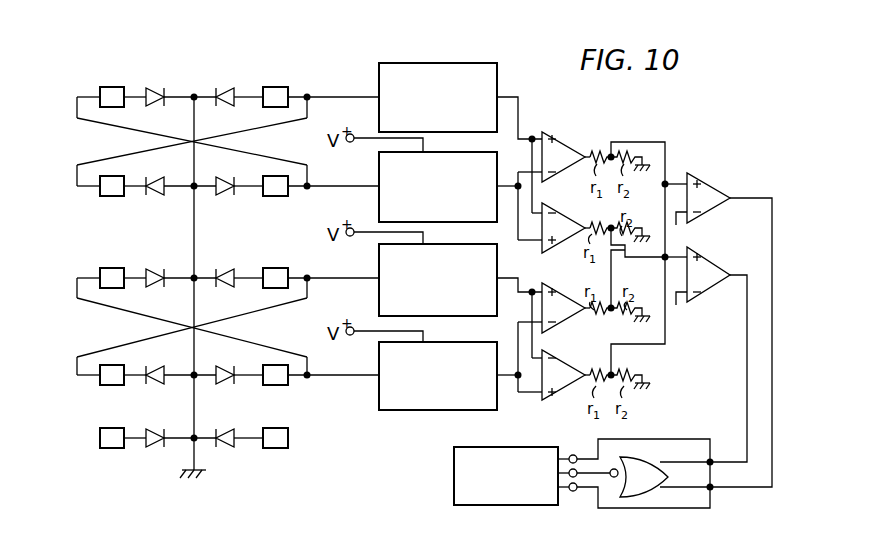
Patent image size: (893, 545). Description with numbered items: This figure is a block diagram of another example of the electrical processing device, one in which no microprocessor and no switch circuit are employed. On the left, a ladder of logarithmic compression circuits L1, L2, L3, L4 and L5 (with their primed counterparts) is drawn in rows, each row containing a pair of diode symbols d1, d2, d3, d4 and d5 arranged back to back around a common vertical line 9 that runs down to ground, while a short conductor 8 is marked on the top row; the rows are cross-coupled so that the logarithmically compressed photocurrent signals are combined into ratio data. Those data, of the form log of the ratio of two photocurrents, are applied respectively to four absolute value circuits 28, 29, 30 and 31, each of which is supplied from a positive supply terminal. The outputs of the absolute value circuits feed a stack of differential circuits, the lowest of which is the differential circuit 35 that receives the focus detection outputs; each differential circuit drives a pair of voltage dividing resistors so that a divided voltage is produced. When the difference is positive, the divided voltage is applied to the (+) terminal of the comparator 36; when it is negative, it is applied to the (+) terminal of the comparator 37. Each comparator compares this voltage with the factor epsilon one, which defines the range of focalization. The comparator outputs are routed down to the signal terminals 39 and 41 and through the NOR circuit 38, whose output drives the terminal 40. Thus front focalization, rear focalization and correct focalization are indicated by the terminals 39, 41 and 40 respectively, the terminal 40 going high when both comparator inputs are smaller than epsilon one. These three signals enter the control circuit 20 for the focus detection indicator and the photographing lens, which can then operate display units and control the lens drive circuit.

The conductor line 8 is at (179, 107).
The common bus line 9 is at (208, 112).
The control circuit 20 is at (454, 478).
The absolute value circuit 28 is at (420, 63).
The absolute value circuit 29 is at (379, 175).
The absolute value circuit 30 is at (379, 265).
The absolute value circuit 31 is at (379, 357).
The differential circuit 35 is at (563, 397).
The comparator 36 is at (693, 178).
The comparator 37 is at (693, 257).
The NOR circuit 38 is at (652, 458).
The signal terminal 39 is at (569, 456).
The signal terminal 40 is at (571, 477).
The signal terminal 41 is at (576, 491).
The logarithmic compression circuit L1 is at (113, 88).
The logarithmic compression circuit L2 is at (113, 176).
The logarithmic compression circuit L3 is at (113, 268).
The logarithmic compression circuit L4 is at (113, 366).
The logarithmic compression circuit L5 is at (113, 428).
The diode d1 is at (153, 74).
The diode d2 is at (158, 178).
The diode d3 is at (158, 262).
The diode d4 is at (160, 368).
The diode d5 is at (157, 422).